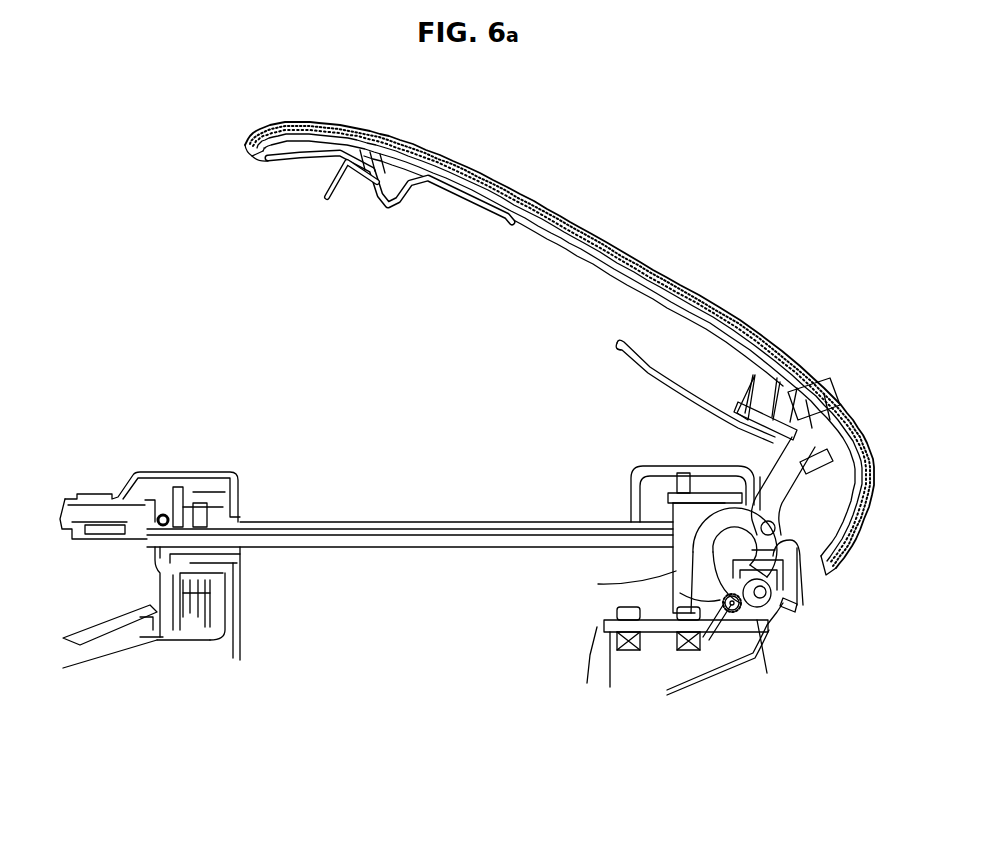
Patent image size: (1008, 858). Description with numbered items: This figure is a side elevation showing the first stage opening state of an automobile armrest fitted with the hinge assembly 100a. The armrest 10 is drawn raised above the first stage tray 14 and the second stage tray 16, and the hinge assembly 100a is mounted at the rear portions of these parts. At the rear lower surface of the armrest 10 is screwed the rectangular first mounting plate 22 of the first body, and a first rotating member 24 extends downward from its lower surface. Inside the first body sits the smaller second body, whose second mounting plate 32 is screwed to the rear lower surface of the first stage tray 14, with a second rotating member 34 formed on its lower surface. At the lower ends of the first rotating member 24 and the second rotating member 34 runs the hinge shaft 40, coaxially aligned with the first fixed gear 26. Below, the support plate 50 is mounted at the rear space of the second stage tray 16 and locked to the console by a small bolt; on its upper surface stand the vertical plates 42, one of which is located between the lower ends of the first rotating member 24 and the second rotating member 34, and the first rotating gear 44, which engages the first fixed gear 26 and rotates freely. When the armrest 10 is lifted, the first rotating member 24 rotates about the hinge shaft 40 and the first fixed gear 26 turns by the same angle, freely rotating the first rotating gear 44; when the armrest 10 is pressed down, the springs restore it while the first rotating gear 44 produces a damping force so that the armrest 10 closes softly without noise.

The armrest 10 is at (607, 246).
The first mounting plate 22 is at (808, 432).
The first rotating member 24 is at (783, 478).
The second mounting plate 32 is at (712, 493).
The second rotating member 34 is at (680, 520).
The hinge assembly 100a is at (664, 580).
The first stage tray 14 is at (375, 522).
The second stage tray 16 is at (390, 588).
The hinge shaft 40 is at (790, 603).
The first fixed gear 26 is at (770, 610).
The first rotating gear 44 is at (733, 612).
The vertical plate 42 is at (713, 613).
The support plate 50 is at (657, 633).